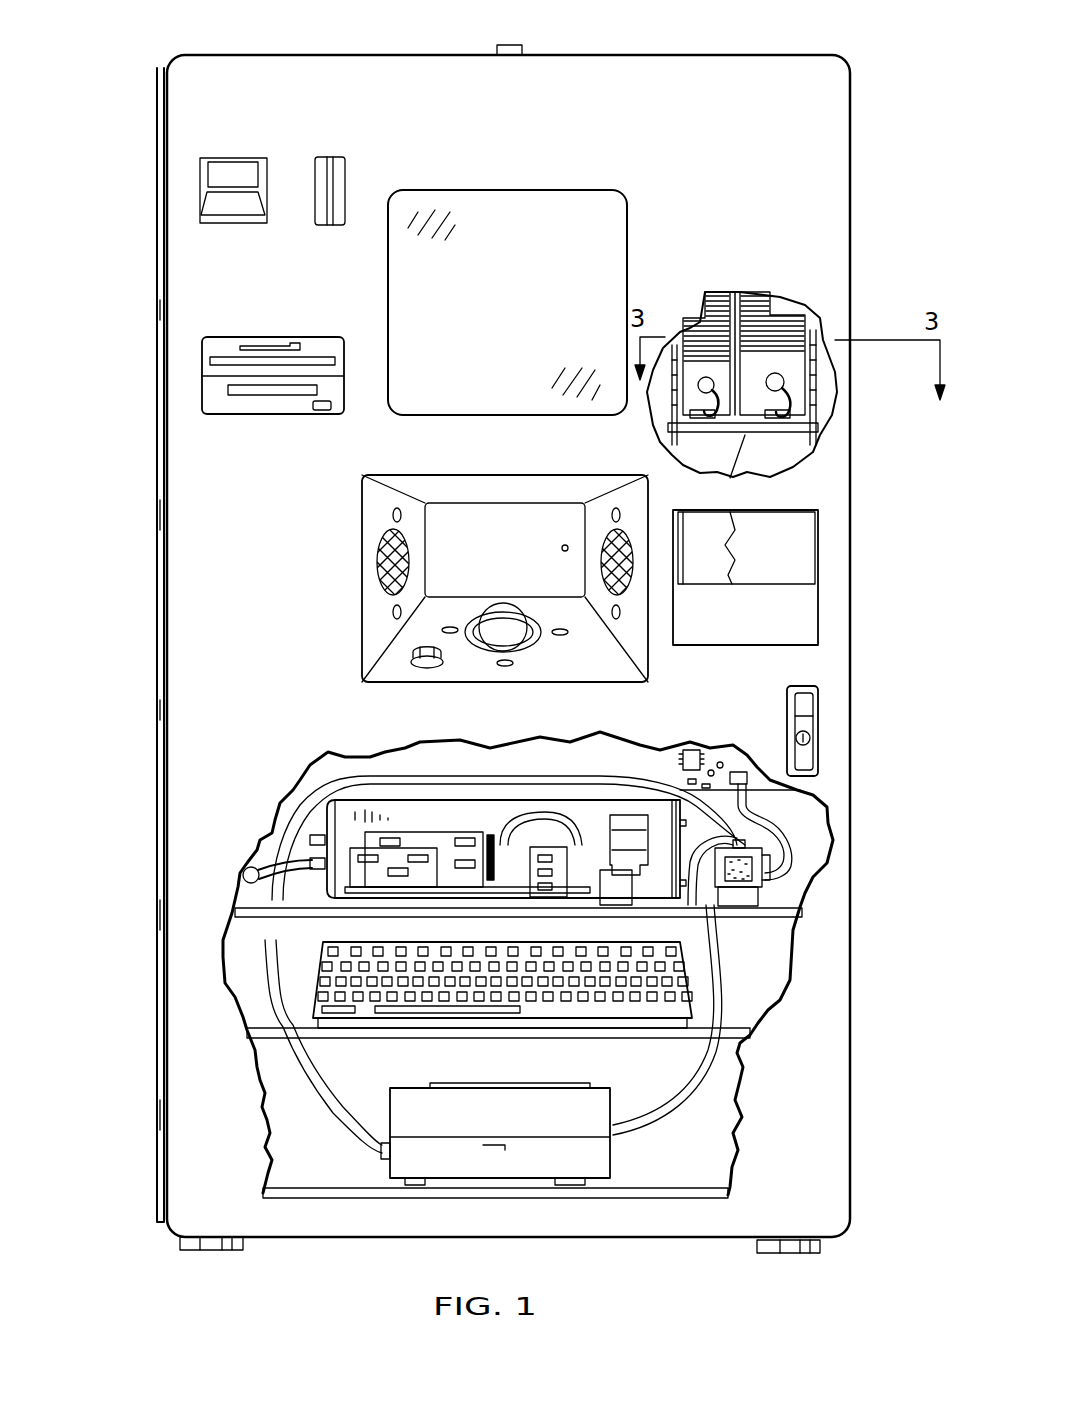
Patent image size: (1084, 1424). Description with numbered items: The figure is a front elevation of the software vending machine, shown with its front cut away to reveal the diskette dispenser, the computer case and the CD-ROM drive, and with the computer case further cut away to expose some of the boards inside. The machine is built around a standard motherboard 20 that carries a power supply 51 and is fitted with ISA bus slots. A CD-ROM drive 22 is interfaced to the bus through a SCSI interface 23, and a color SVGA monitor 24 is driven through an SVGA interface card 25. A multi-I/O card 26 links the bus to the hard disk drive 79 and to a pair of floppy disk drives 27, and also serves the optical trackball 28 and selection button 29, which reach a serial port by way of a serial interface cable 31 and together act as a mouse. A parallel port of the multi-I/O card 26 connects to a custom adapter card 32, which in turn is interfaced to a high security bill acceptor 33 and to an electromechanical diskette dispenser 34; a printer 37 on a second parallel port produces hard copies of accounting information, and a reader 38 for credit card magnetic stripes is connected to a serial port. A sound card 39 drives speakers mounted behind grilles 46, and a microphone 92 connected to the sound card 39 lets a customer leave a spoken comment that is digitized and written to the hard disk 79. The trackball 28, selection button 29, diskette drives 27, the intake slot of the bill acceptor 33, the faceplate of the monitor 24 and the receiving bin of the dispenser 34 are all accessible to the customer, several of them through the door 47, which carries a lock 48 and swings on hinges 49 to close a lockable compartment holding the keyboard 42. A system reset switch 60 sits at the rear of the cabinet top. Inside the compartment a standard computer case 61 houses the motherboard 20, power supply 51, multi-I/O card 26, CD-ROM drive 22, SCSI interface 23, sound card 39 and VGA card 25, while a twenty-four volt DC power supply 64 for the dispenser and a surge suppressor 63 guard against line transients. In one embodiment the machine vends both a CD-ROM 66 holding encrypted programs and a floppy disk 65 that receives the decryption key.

The motherboard 20 is at (300, 938).
The CD-ROM drive 22 is at (612, 903).
The SCSI interface 23 is at (513, 833).
The monitor 24 is at (565, 205).
The SVGA interface card 25 is at (350, 845).
The multi-I/O card 26 is at (430, 832).
The floppy disk drive 27 is at (205, 350).
The optical trackball 28 is at (505, 625).
The selection button 29 is at (418, 650).
The serial interface cable 31 is at (250, 868).
The adapter card 32 is at (735, 772).
The bill acceptor 33 is at (215, 158).
The diskette dispenser 34 is at (835, 380).
The printer 37 is at (432, 1170).
The reader 38 is at (325, 157).
The sound card 39 is at (625, 847).
The keyboard 42 is at (760, 975).
The grilles 46 is at (378, 565).
The door 47 is at (712, 100).
The lock 48 is at (820, 742).
The hinges 49 is at (155, 530).
The power supply 51 is at (458, 812).
The system reset switch 60 is at (510, 45).
The computer case 61 is at (790, 840).
The surge suppressor 63 is at (760, 895).
The 24-volt D.C. power supply 64 is at (770, 860).
The floppy disk 65 is at (690, 318).
The CD-ROM 66 is at (775, 305).
The hard disk drive 79 is at (760, 945).
The microphone 92 is at (563, 546).